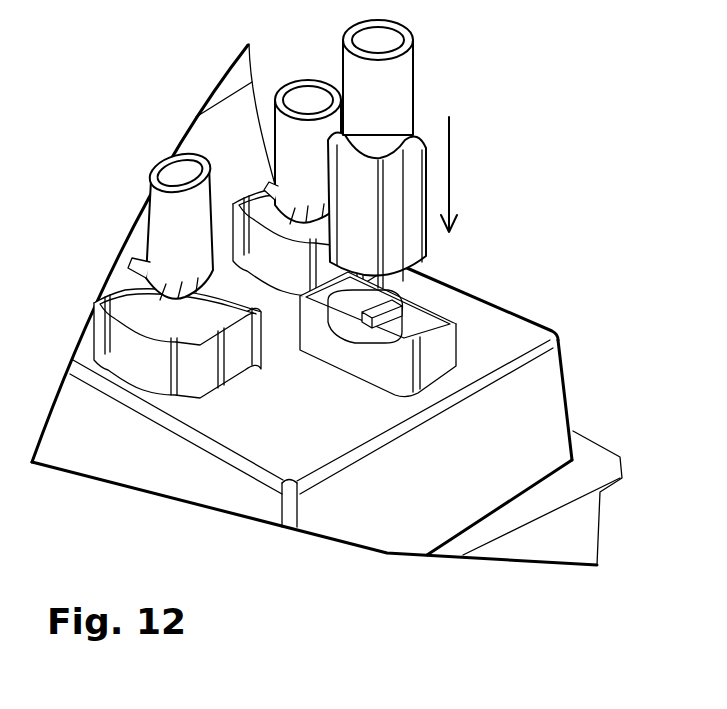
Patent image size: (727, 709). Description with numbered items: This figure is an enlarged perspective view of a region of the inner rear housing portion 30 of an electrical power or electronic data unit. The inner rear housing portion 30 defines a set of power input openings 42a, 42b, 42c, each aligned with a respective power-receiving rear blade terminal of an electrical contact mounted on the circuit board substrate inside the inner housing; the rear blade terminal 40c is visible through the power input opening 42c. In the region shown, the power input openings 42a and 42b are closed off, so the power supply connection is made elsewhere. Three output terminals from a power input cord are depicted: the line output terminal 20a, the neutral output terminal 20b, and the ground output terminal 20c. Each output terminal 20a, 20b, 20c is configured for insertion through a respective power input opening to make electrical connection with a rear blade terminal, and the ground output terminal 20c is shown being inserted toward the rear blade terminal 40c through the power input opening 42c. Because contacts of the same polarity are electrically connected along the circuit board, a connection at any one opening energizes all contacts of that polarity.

The inner rear housing portion 30 is at (563, 366).
The line output terminal 20a is at (294, 85).
The neutral output terminal 20b is at (198, 155).
The ground output terminal 20c is at (403, 97).
The power input opening 42a is at (262, 205).
The power input opening 42b is at (211, 312).
The power input opening 42c is at (440, 324).
The rear blade terminal 40c is at (413, 320).